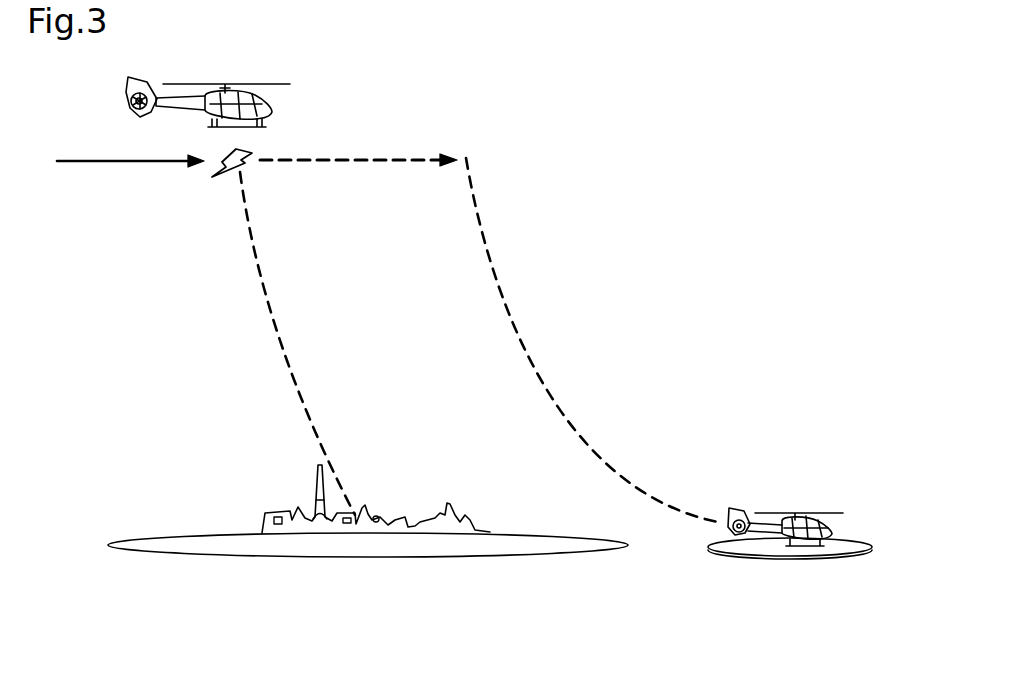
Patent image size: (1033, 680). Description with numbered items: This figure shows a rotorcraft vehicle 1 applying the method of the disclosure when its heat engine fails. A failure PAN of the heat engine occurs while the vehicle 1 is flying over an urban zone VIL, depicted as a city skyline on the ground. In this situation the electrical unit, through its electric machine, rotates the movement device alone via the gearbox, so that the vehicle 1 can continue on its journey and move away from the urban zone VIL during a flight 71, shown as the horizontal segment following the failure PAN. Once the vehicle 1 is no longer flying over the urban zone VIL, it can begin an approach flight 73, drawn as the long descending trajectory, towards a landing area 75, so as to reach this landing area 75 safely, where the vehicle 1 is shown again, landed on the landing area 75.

The vehicle 1 is at (277, 112).
The flight 71 is at (455, 176).
The approach flight 73 is at (503, 295).
The landing area 75 is at (757, 558).
The failure PAN is at (192, 184).
The urban zone VIL is at (280, 476).